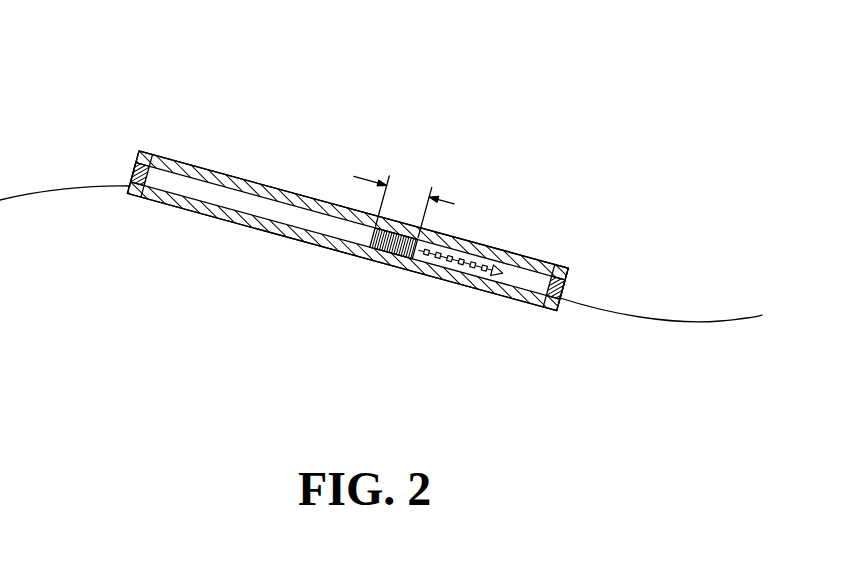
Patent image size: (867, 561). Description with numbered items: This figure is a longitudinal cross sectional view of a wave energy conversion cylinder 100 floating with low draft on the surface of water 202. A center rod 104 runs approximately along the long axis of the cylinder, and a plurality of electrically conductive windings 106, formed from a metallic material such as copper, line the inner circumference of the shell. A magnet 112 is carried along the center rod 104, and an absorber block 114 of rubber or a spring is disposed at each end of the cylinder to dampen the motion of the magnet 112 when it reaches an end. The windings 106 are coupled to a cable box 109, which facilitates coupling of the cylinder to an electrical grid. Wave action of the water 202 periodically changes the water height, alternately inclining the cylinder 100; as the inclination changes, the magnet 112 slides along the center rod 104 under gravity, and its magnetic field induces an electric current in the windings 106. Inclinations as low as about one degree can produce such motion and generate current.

The wave energy conversion cylinder 100 is at (697, 88).
The water 202 is at (107, 184).
The center rod 104 is at (232, 197).
The plurality of electrically conductive windings 106 is at (468, 247).
The magnet 112 is at (400, 253).
The absorber block 114 is at (557, 267).
The cable box 109 is at (567, 283).